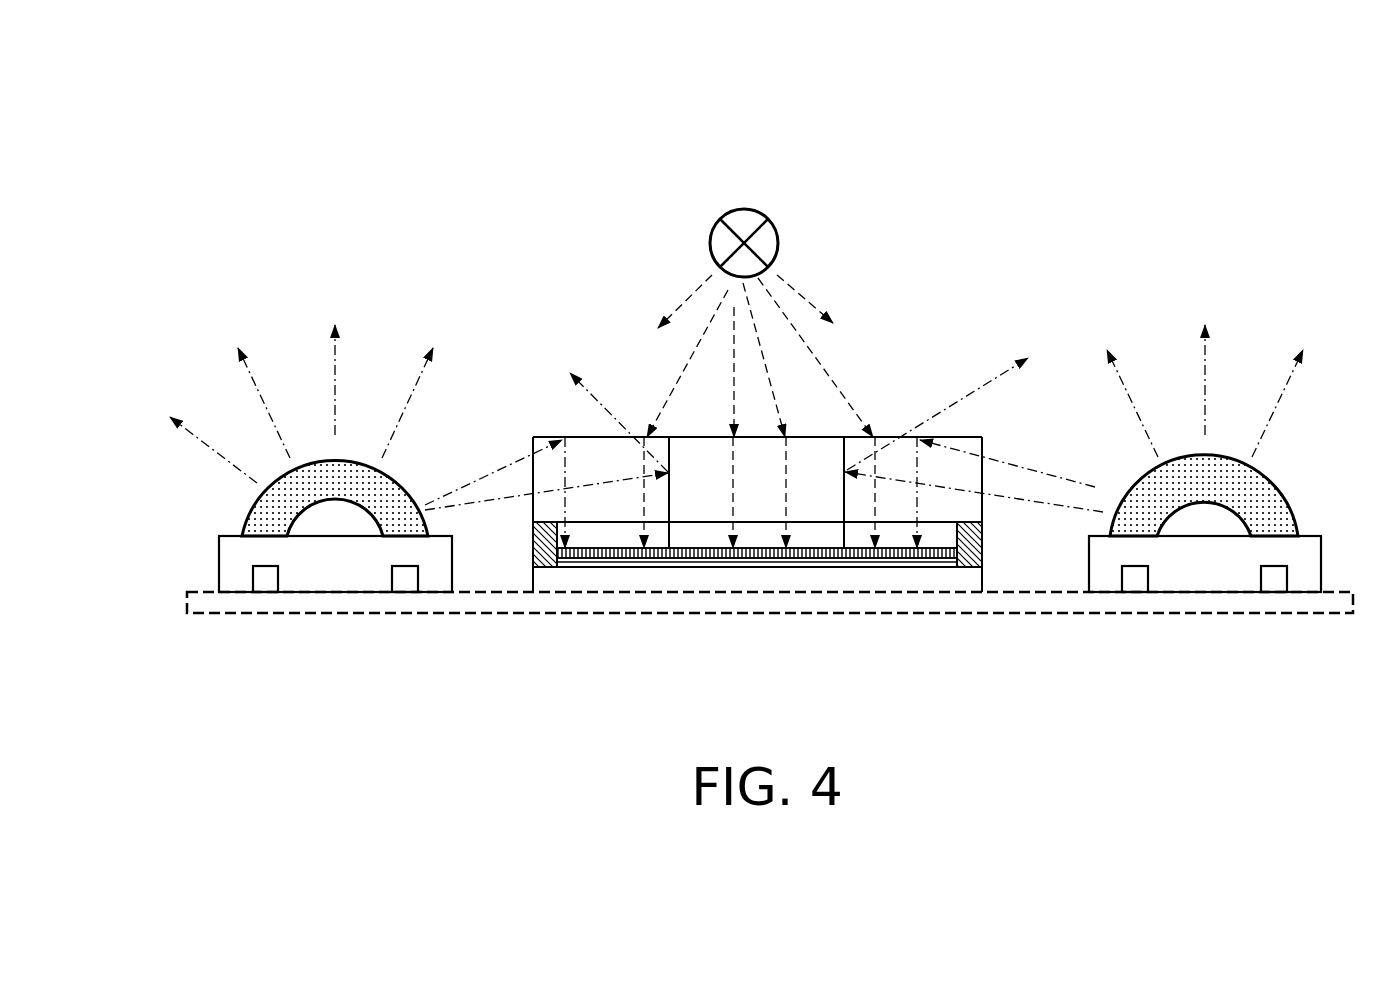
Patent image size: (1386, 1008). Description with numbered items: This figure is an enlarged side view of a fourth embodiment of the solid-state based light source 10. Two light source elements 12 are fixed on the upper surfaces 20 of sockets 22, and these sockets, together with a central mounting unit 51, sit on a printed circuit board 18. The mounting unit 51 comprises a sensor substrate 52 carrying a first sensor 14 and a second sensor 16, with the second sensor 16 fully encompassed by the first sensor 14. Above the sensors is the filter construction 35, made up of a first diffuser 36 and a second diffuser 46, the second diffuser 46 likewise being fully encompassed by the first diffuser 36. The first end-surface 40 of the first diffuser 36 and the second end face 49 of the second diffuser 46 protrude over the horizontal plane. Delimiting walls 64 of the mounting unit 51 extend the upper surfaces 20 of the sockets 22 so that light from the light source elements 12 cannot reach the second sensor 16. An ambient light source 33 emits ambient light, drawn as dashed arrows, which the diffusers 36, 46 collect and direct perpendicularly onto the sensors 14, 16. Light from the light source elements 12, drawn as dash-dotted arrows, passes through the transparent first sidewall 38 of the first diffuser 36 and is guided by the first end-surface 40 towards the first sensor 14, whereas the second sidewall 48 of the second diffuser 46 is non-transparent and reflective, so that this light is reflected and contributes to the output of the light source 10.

The solid-state based light source 10 is at (545, 235).
The light source element 12 is at (278, 305).
The first sensor 14 is at (637, 553).
The second sensor 16 is at (763, 553).
The printed circuit board 18 is at (335, 603).
The upper surface 20 is at (228, 533).
The socket 22 is at (232, 570).
The ambient light source 33 is at (778, 243).
The filter construction 35 is at (708, 507).
The first diffuser 36 is at (583, 467).
The first sidewall 38 is at (533, 440).
The first end-surface 40 is at (580, 437).
The second diffuser 46 is at (813, 452).
The second sidewall 48 is at (670, 447).
The second end face 49 is at (700, 437).
The mounting unit 51 is at (515, 577).
The sensor substrate 52 is at (587, 577).
The delimiting walls 64 is at (982, 545).